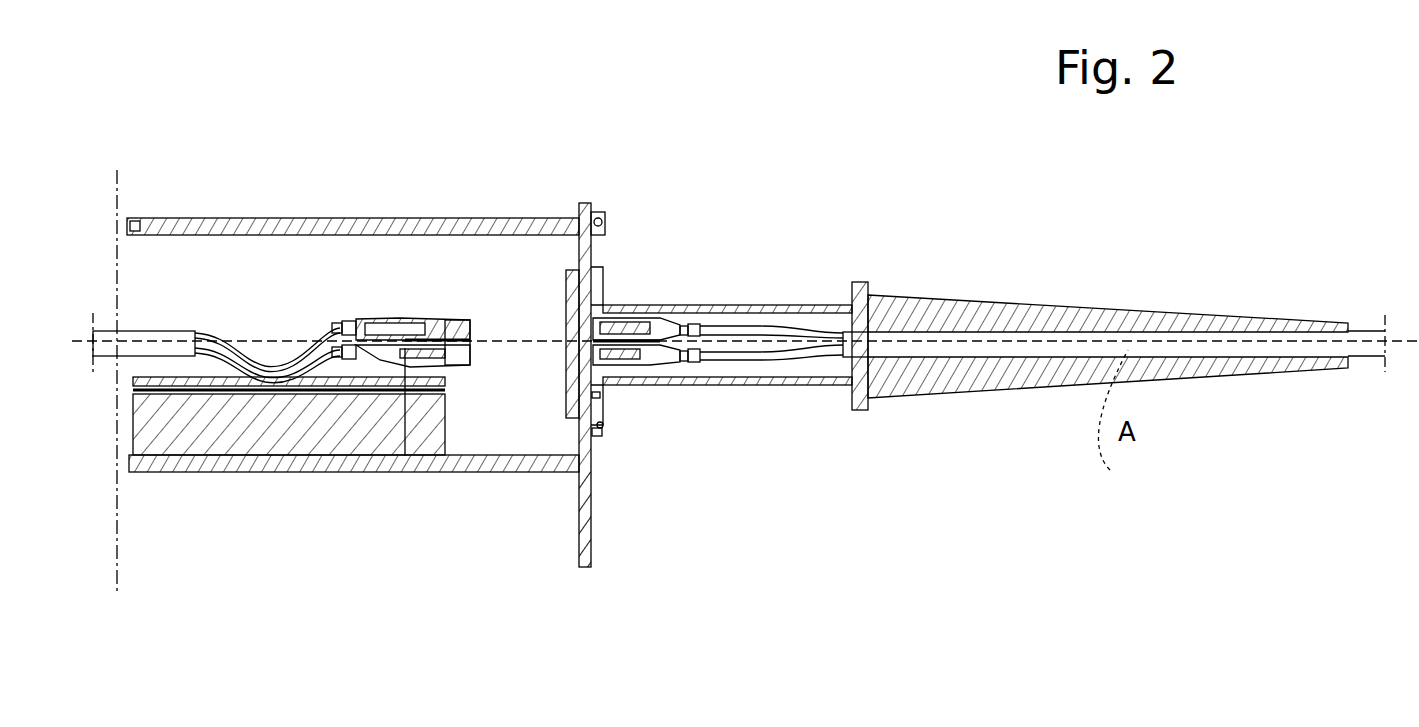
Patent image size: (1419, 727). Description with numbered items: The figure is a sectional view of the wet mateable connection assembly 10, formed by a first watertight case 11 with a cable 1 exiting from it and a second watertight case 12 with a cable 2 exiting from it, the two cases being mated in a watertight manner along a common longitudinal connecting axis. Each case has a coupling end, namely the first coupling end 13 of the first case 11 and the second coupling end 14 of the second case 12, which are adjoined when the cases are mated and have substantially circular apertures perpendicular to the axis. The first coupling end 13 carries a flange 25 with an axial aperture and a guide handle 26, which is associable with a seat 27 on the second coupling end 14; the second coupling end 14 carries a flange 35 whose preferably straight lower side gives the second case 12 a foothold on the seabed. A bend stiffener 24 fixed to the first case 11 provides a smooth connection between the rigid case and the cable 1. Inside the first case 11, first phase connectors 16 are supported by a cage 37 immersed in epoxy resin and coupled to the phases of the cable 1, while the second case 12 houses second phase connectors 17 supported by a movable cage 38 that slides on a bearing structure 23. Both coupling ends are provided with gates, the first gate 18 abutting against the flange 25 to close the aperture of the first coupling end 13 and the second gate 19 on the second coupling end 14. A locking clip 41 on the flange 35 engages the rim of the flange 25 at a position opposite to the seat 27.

The cable 1 is at (1352, 342).
The cable 2 is at (146, 333).
The wet mateable connection assembly 10 is at (816, 140).
The first watertight case 11 is at (803, 310).
The second watertight case 12 is at (350, 223).
The first coupling end 13 is at (622, 276).
The second coupling end 14 is at (586, 185).
The first phase connectors 16 is at (678, 310).
The second phase connectors 17 is at (402, 295).
The first gate 18 is at (603, 398).
The second gate 19 is at (572, 338).
The bearing structure 23 is at (327, 380).
The bend stiffener 24 is at (1066, 313).
The flange 25 is at (604, 424).
The guide handle 26 is at (600, 216).
The seat 27 is at (605, 228).
The flange 35 is at (584, 530).
The cage 37 is at (643, 380).
The movable cage 38 is at (405, 456).
The locking clip 41 is at (602, 432).